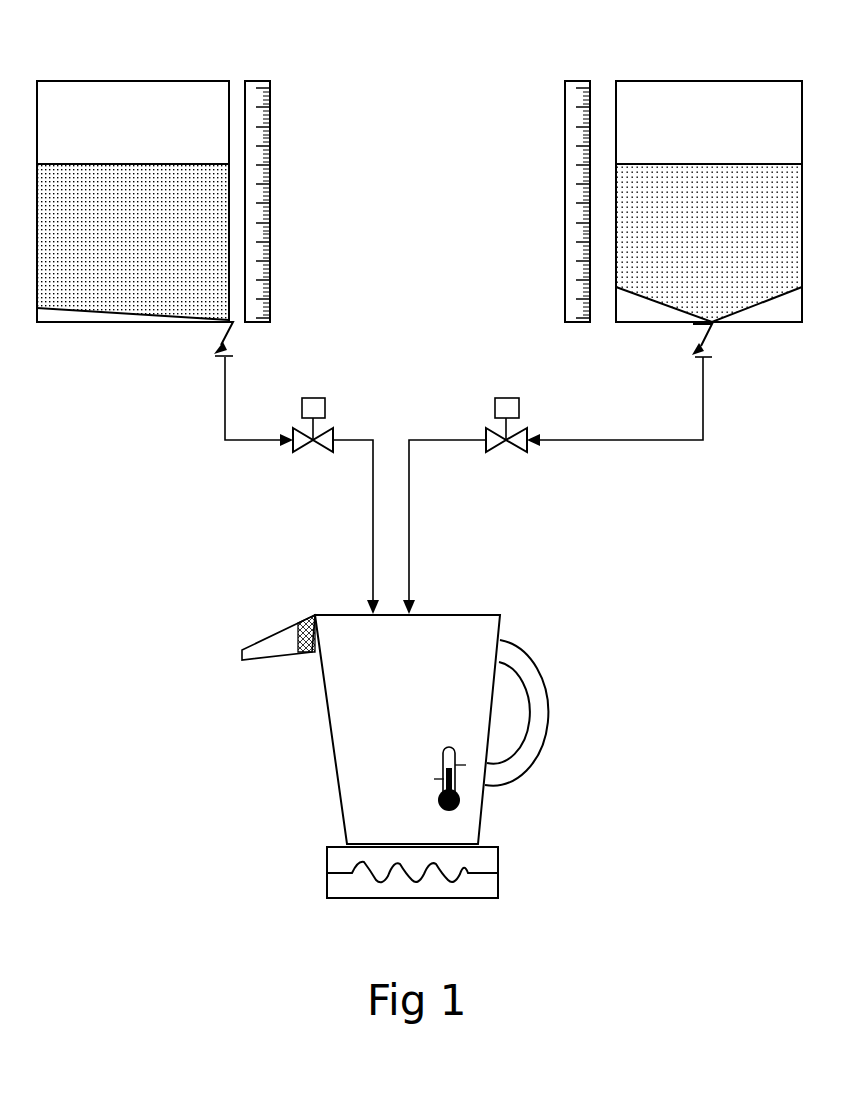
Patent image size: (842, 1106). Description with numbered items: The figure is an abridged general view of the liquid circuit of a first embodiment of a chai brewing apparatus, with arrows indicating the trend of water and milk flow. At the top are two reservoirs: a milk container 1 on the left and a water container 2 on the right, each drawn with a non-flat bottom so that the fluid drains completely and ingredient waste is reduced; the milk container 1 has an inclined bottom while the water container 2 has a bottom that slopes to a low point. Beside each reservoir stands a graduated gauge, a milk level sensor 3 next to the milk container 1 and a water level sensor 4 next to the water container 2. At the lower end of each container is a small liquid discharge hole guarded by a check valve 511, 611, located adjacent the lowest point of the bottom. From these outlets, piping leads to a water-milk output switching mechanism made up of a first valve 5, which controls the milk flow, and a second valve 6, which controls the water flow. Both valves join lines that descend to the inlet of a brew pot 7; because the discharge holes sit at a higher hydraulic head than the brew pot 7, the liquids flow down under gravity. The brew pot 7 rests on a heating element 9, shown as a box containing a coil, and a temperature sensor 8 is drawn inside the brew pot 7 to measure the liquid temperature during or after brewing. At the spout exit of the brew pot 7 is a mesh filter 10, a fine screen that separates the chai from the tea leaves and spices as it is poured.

The milk container 1 is at (125, 80).
The water container 2 is at (695, 80).
The milk level sensor 3 is at (270, 203).
The water level sensor 4 is at (565, 203).
The first valve 5 is at (326, 400).
The second valve 6 is at (519, 400).
The brew pot 7 is at (502, 614).
The temperature sensor 8 is at (461, 794).
The heating element 9 is at (370, 873).
The mesh filter 10 is at (298, 640).
The check valve 511 is at (210, 345).
The check valve 611 is at (727, 345).